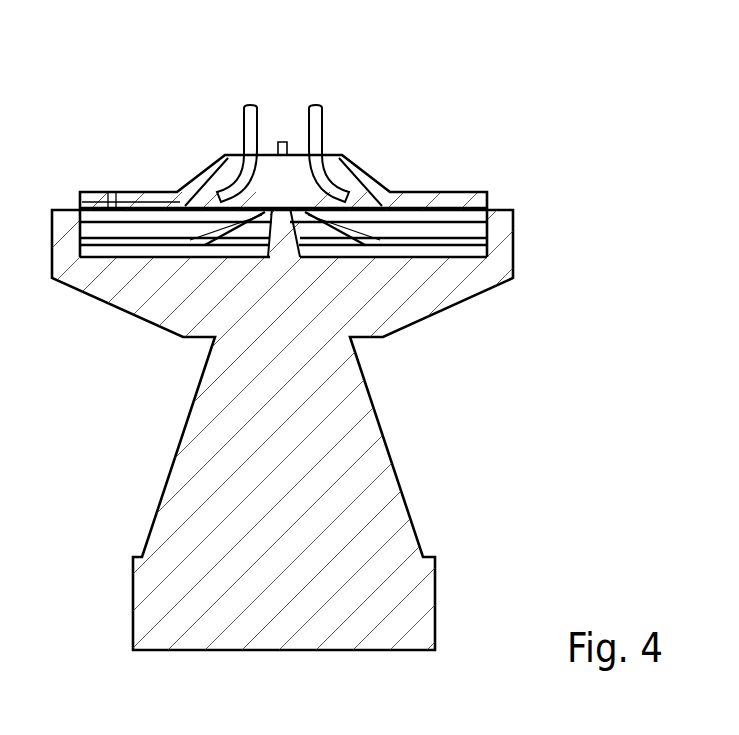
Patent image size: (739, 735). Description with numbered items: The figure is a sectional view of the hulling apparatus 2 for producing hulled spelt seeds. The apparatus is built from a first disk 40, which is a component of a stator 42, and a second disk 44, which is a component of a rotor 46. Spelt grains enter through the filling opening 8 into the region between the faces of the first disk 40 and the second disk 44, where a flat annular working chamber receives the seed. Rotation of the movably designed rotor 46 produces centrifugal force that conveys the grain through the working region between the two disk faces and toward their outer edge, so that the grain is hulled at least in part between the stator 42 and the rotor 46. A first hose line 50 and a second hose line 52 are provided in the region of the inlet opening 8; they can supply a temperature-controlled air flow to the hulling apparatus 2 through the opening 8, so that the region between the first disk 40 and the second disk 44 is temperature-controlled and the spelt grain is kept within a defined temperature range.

The hulling apparatus 2 is at (466, 381).
The filling opening 8 is at (266, 163).
The first disk 40 is at (489, 209).
The stator 42 is at (373, 165).
The second disk 44 is at (489, 233).
The rotor 46 is at (447, 256).
The first hose line 50 is at (249, 136).
The second hose line 52 is at (315, 122).